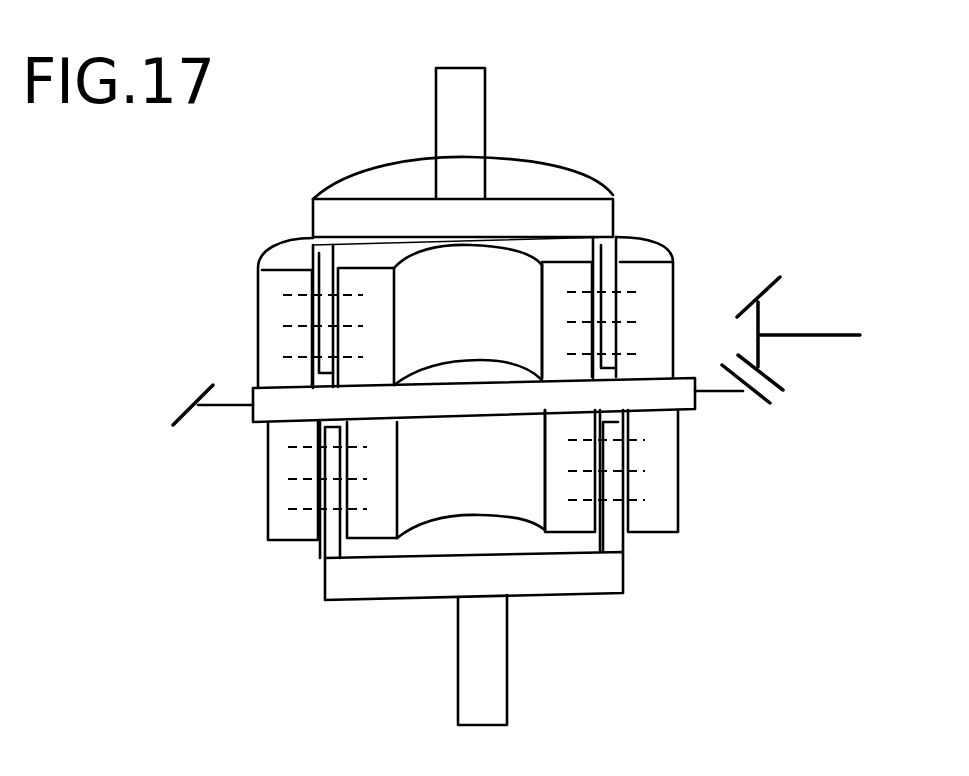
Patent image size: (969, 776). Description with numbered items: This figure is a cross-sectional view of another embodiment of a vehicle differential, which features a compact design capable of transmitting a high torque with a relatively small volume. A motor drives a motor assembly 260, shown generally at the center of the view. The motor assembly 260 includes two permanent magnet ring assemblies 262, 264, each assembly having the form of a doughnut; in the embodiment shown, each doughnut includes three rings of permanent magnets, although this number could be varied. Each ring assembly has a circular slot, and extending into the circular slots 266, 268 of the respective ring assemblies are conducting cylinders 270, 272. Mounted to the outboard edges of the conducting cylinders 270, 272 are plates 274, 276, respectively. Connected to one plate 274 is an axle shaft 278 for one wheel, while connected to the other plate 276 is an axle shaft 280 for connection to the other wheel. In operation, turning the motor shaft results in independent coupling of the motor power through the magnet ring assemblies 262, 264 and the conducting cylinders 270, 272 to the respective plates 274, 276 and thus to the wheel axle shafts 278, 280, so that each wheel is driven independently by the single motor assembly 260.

The motor assembly 260 is at (232, 340).
The permanent magnet ring assembly 262 is at (700, 247).
The permanent magnet ring assembly 264 is at (273, 498).
The circular slot 266 is at (615, 373).
The circular slot 268 is at (323, 427).
The conducting cylinder 270 is at (318, 262).
The conducting cylinder 272 is at (333, 552).
The plate 274 is at (593, 203).
The plate 276 is at (617, 572).
The axle shaft 278 is at (473, 120).
The axle shaft 280 is at (497, 653).